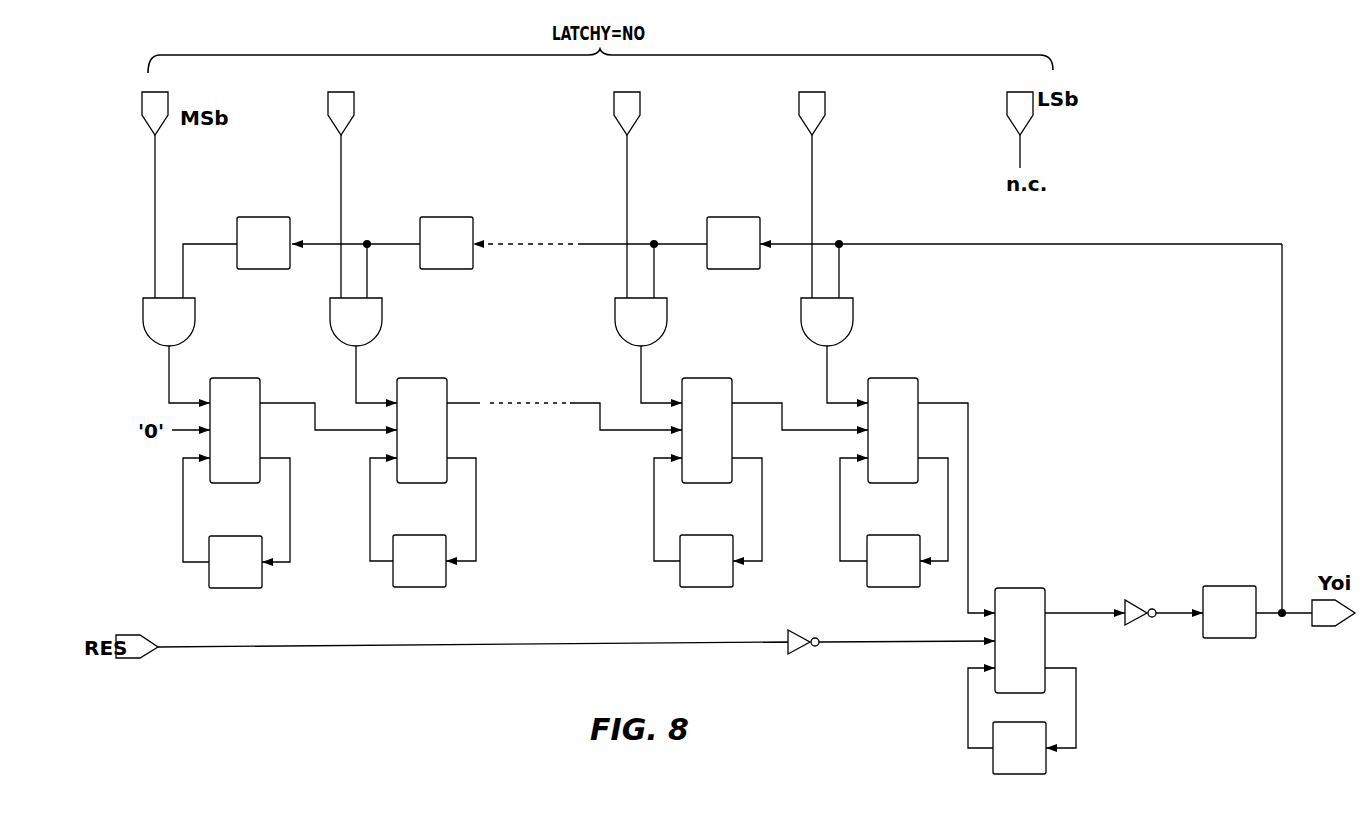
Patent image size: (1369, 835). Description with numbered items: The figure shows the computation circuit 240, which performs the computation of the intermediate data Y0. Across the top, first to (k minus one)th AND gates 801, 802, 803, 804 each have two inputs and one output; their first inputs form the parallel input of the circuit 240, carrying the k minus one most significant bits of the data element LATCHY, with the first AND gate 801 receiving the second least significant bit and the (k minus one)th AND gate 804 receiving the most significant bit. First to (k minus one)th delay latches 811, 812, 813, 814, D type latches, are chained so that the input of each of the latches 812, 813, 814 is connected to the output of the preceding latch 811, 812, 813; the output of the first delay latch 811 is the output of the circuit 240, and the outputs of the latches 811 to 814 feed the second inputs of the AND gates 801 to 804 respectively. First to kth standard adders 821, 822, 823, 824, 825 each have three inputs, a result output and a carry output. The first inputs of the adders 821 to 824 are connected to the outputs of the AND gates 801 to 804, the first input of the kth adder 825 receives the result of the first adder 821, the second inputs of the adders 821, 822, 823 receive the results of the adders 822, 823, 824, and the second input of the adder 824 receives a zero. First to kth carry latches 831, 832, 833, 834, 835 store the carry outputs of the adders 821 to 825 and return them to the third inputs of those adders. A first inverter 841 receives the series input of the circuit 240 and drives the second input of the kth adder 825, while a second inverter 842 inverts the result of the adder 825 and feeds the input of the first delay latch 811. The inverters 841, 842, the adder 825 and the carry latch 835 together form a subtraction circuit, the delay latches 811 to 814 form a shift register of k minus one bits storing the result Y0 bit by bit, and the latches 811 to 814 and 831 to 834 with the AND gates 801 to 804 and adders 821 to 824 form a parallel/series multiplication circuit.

The computation circuit 240 is at (486, 688).
The first AND gate 801 is at (854, 320).
The second AND gate 802 is at (669, 322).
The third AND gate 803 is at (384, 322).
The (k−1)th AND gate 804 is at (197, 322).
The first delay latch 811 is at (1235, 638).
The second delay latch 812 is at (737, 217).
The third delay latch 813 is at (447, 217).
The (k−1)th delay latch 814 is at (264, 217).
The first adder 821 is at (894, 378).
The second adder 822 is at (710, 378).
The third adder 823 is at (424, 378).
The (k−1)th adder 824 is at (237, 378).
The kth adder 825 is at (1022, 588).
The first carry latch 831 is at (880, 587).
The second carry latch 832 is at (697, 587).
The third carry latch 833 is at (410, 587).
The (k−1)th carry latch 834 is at (225, 588).
The kth carry latch 835 is at (993, 758).
The first inverter 841 is at (803, 655).
The second inverter 842 is at (1140, 626).